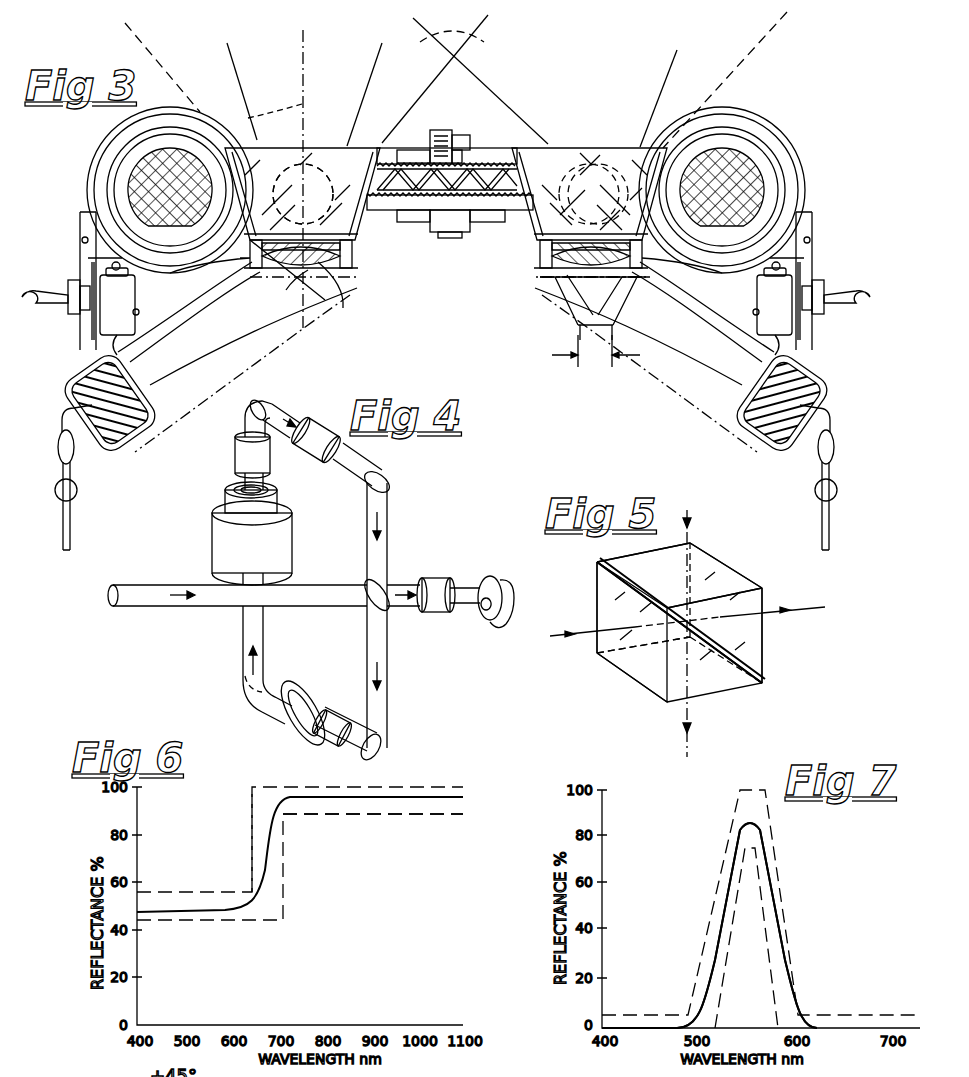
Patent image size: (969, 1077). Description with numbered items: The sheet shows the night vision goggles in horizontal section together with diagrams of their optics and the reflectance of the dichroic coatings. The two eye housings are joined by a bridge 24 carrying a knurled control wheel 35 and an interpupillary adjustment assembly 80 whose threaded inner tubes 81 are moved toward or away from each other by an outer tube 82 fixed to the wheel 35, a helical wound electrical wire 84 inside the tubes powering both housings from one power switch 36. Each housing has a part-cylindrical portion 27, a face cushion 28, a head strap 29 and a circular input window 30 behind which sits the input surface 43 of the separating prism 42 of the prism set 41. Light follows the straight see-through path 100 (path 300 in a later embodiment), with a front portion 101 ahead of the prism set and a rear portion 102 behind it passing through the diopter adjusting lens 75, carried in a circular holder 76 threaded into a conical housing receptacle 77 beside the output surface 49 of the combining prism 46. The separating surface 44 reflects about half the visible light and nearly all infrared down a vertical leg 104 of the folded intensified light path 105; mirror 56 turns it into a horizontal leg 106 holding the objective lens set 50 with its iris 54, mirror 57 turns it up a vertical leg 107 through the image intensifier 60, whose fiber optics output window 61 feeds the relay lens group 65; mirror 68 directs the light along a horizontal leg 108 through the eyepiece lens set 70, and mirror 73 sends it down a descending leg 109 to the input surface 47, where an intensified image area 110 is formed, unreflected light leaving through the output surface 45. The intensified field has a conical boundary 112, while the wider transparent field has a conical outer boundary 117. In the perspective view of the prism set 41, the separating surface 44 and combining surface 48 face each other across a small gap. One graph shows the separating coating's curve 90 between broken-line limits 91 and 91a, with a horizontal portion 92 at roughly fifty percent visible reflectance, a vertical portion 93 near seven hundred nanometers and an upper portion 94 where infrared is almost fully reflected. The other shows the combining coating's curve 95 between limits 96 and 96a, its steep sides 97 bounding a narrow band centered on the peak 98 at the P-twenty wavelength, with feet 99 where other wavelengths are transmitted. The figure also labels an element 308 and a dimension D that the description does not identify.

In FIG. 3, the bridge 24 is at (487, 142).
In FIG. 3, the part-cylindrical portion 27 is at (103, 158).
In FIG. 3, the face cushion 28 is at (122, 420).
In FIG. 3, the head strap 29 is at (72, 536).
In FIG. 3, the input window 30 is at (352, 148).
In FIG. 3, the knurled control wheel 35 is at (456, 130).
In FIG. 3, the power switch 36 is at (38, 309).
In FIG. 3, the separating/combining prism set 41 is at (623, 153).
In FIG. 4, the separating/combining prism set 41 is at (389, 611).
In FIG. 5, the separating/combining prism set 41 is at (687, 633).
In FIG. 5, the separating prism 42 is at (642, 688).
In FIG. 5, the input surface 43 is at (613, 607).
In FIG. 5, the separating surface 44 is at (735, 665).
In FIG. 5, the output surface 45 is at (628, 676).
In FIG. 3, the combining prism 46 is at (574, 168).
In FIG. 5, the combining prism 46 is at (740, 570).
In FIG. 5, the input surface 47 is at (643, 560).
In FIG. 5, the combining surface 48 is at (762, 657).
In FIG. 5, the output surface 49 is at (740, 600).
In FIG. 4, the objective lens set 50 is at (337, 712).
In FIG. 4, the iris 54 is at (314, 680).
In FIG. 4, the mirror 56 is at (390, 746).
In FIG. 4, the mirror 57 is at (243, 678).
In FIG. 4, the image intensifier 60 is at (212, 538).
In FIG. 3, the fiber optics output window 61 is at (745, 150).
In FIG. 4, the relay lens group 65 is at (235, 454).
In FIG. 4, the mirror 68 is at (280, 402).
In FIG. 4, the eyepiece lens set 70 is at (307, 462).
In FIG. 4, the mirror 73 is at (388, 489).
In FIG. 3, the diopter adjusting lens 75 is at (328, 291).
In FIG. 4, the diopter adjusting lens 75 is at (437, 576).
In FIG. 3, the circular holder 76 is at (350, 270).
In FIG. 3, the housing receptacle 77 is at (352, 247).
In FIG. 3, the interpupillary adjustment assembly 80 is at (455, 236).
In FIG. 3, the inner tubes 81 is at (440, 212).
In FIG. 3, the outer tube 82 is at (416, 150).
In FIG. 3, the helical wound electrical wire 84 is at (492, 212).
In FIG. 6, the curve 90 is at (315, 803).
In FIG. 6, the broken line 91 is at (246, 804).
In FIG. 6, the broken line 91a is at (372, 818).
In FIG. 6, the horizontal portion 92 is at (200, 920).
In FIG. 6, the vertical portion 93 is at (262, 860).
In FIG. 6, the upper portion 94 is at (434, 803).
In FIG. 7, the curve 95 is at (784, 931).
In FIG. 7, the broken line 96 is at (714, 854).
In FIG. 7, the broken line 96a is at (775, 880).
In FIG. 7, the steep sides 97 is at (778, 962).
In FIG. 7, the peak 98 is at (742, 818).
In FIG. 7, the feet 99 is at (778, 1016).
In FIG. 4, the see-through path 100 is at (182, 607).
In FIG. 4, the front portion 101 is at (332, 586).
In FIG. 4, the rear portion 102 is at (458, 612).
In FIG. 4, the vertical leg 104 is at (392, 698).
In FIG. 4, the folded intensified light path 105 is at (342, 754).
In FIG. 4, the horizontal leg 106 is at (280, 690).
In FIG. 4, the vertical leg 107 is at (244, 654).
In FIG. 4, the horizontal leg 108 is at (372, 459).
In FIG. 4, the descending leg 109 is at (390, 524).
In FIG. 3, the intensified image area 110 is at (321, 165).
In FIG. 3, the conical boundary 112 is at (363, 104).
In FIG. 3, the circularly conical outer boundary 117 is at (140, 42).
In FIG. 3, the see-through path 300 is at (305, 70).
In FIG. 4, the light conduit 308 is at (306, 413).
In FIG. 3, the diameter D is at (586, 351).